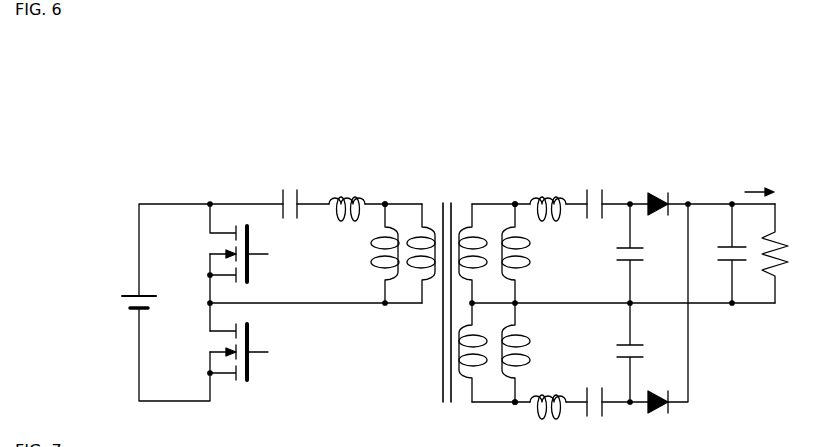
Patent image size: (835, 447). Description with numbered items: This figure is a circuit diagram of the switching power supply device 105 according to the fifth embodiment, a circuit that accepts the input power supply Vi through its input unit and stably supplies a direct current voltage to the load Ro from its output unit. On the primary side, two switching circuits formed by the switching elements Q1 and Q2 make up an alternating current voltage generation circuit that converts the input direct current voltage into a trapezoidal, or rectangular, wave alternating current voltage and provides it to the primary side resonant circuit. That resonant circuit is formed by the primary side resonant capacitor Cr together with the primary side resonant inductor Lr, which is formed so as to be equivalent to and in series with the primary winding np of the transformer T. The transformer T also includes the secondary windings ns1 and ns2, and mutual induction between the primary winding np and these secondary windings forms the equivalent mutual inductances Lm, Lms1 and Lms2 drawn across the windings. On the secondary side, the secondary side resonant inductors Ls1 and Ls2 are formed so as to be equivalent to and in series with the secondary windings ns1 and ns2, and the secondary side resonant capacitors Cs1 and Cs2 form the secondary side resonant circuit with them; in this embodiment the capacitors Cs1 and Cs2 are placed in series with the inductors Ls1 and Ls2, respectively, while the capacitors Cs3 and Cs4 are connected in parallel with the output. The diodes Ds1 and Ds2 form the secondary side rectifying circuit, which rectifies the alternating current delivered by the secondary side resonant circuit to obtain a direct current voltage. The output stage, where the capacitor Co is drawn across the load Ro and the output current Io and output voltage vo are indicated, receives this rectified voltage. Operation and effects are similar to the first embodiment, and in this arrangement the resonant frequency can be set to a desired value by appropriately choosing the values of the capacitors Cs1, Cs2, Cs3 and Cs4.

The switching power supply device 105 is at (819, 148).
The input power supply Vi is at (134, 286).
The switching element Q1 is at (248, 352).
The switching element Q2 is at (248, 243).
The primary side resonant capacitor Cr is at (289, 191).
The primary side resonant inductor Lr is at (347, 192).
The equivalent mutual inductance Lm is at (386, 253).
The primary winding np is at (398, 191).
The transformer T is at (446, 289).
The secondary winding ns1 is at (496, 191).
The secondary winding ns2 is at (497, 416).
The equivalent mutual inductance Lms1 is at (512, 253).
The equivalent mutual inductance Lms2 is at (512, 352).
The secondary side resonant inductor Ls1 is at (548, 192).
The secondary side resonant inductor Ls2 is at (548, 421).
The secondary side resonant capacitor Cs1 is at (594, 191).
The secondary side resonant capacitor Cs2 is at (594, 388).
The capacitor Cs3 is at (645, 253).
The capacitor Cs4 is at (645, 352).
The diode Ds1 is at (656, 192).
The diode Ds2 is at (656, 415).
The output capacitor Co is at (723, 253).
The load Ro is at (765, 253).
The output current Io is at (759, 180).
The output voltage vo is at (805, 255).